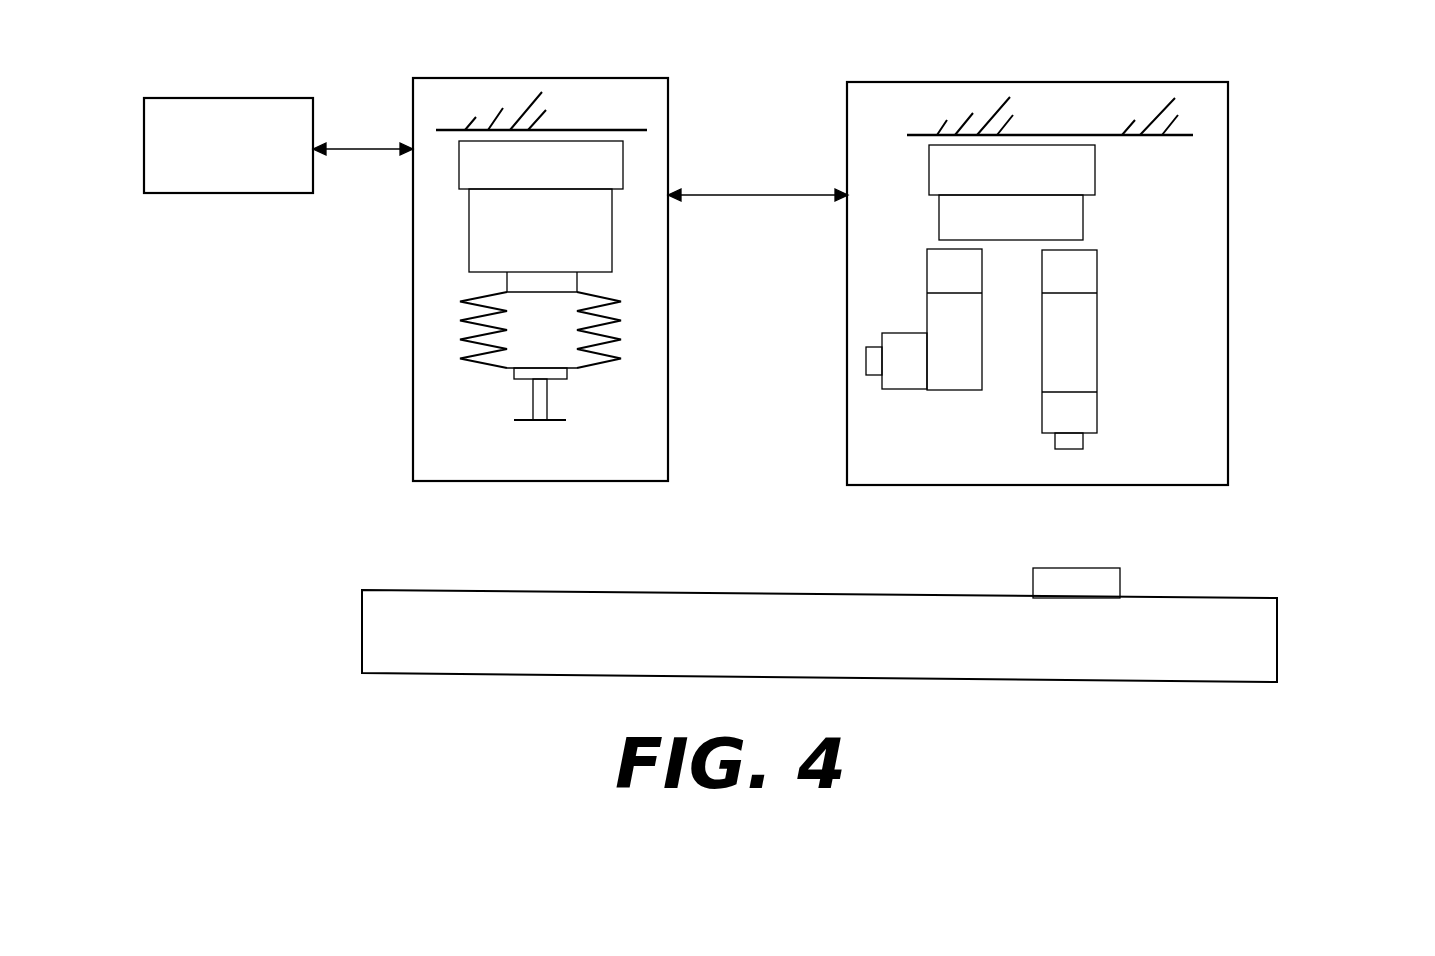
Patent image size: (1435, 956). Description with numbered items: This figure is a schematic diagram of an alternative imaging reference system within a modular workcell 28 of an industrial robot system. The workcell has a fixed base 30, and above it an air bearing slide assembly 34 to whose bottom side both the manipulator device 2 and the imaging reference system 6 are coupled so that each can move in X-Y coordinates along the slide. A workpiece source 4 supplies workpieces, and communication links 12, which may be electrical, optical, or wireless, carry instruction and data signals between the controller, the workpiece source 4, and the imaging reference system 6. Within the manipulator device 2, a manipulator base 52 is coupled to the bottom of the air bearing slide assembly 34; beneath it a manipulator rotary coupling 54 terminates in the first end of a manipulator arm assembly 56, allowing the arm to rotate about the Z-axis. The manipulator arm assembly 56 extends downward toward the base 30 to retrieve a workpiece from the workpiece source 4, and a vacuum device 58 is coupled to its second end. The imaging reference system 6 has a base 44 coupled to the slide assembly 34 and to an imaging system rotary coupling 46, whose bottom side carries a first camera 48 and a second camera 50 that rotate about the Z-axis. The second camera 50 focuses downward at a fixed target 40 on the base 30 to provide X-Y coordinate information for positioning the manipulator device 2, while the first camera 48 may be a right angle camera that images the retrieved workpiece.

The manipulator device 2 is at (412, 382).
The workpiece source 4 is at (144, 130).
The imaging reference system 6 is at (1228, 305).
The communication links 12 is at (360, 148).
The modular workcell 28 is at (1322, 186).
The fixed base 30 is at (362, 633).
The air bearing slide assembly 34 is at (647, 128).
The fixed target 40 is at (1120, 583).
The base 44 is at (1095, 175).
The imaging system rotary coupling 46 is at (1083, 218).
The first camera 48 is at (948, 390).
The second camera 50 is at (1097, 355).
The manipulator base 52 is at (623, 165).
The manipulator rotary coupling 54 is at (612, 240).
The manipulator arm assembly 56 is at (609, 330).
The vacuum device 58 is at (547, 400).